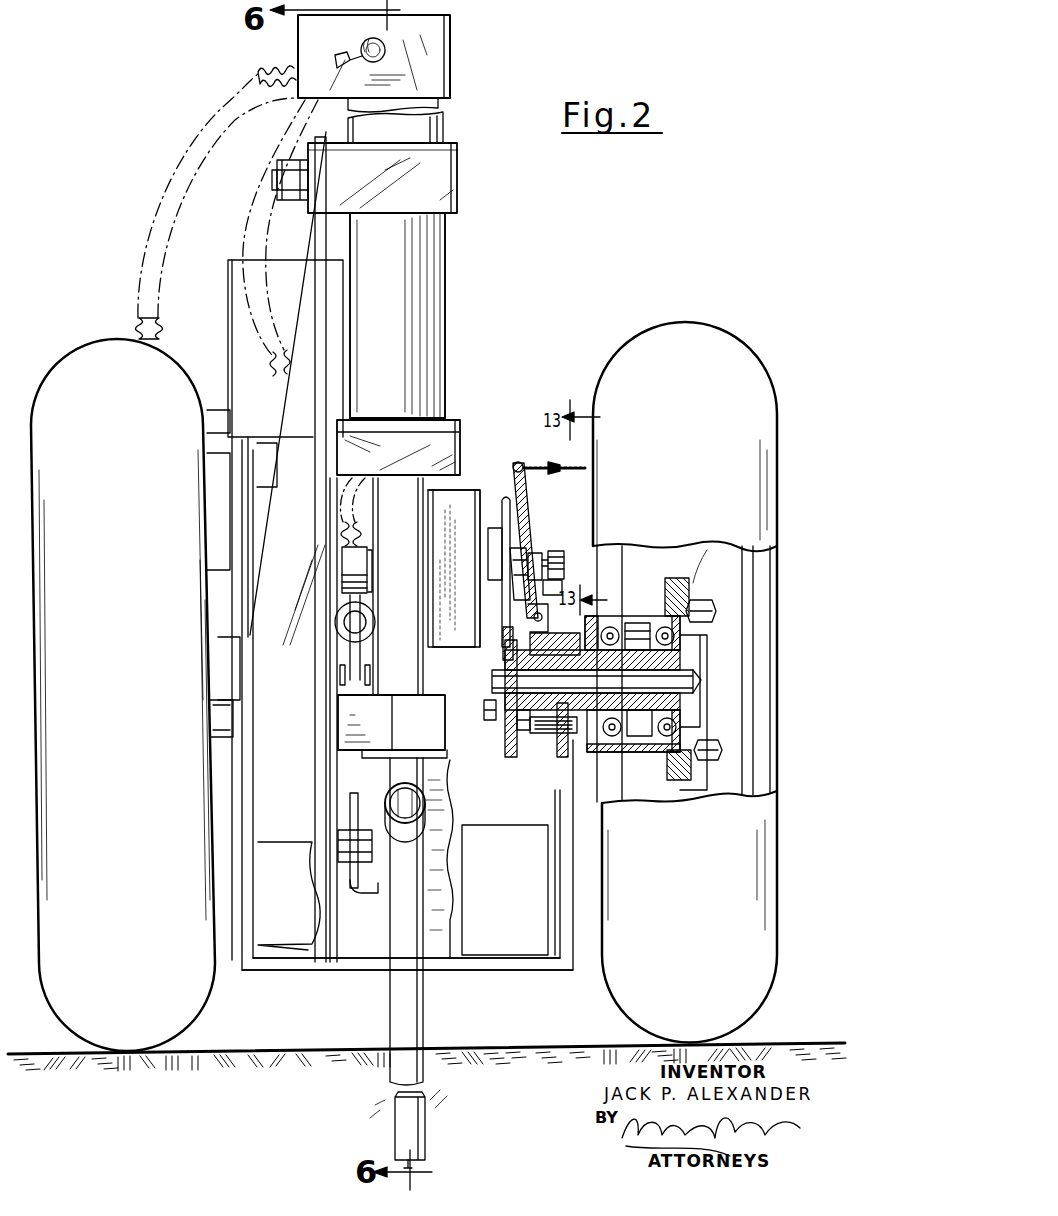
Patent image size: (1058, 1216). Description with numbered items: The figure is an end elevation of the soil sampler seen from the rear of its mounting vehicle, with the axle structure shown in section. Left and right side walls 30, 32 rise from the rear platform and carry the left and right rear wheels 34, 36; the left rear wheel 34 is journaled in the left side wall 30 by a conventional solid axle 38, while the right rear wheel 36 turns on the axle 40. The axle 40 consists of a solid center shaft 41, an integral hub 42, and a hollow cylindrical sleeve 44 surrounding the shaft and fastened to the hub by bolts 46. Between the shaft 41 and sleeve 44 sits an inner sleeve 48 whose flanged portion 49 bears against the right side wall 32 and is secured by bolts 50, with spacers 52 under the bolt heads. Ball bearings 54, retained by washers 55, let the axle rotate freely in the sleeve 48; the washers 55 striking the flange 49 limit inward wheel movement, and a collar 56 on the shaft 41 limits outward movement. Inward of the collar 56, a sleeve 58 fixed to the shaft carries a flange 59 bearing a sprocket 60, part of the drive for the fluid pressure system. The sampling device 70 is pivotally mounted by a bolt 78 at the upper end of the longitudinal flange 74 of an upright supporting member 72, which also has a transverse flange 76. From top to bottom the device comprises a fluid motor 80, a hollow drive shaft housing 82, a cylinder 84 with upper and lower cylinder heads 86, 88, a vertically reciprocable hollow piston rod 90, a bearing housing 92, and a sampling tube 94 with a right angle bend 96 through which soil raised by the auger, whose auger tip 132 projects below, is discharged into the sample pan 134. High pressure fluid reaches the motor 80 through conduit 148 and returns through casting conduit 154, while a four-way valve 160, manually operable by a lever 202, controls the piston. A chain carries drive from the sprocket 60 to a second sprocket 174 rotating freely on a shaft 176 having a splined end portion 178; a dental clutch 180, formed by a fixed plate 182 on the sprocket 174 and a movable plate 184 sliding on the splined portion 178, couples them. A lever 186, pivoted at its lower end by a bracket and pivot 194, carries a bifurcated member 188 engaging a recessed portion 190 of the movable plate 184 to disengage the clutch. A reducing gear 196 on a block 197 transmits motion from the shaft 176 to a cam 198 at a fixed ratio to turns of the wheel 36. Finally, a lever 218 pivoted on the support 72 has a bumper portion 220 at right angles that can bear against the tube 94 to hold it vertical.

The left side wall 30 is at (243, 825).
The right side wall 32 is at (569, 970).
The left rear wheel 34 is at (125, 820).
The right rear wheel 36 is at (686, 862).
The solid axle 38 is at (218, 740).
The axle 40 is at (693, 679).
The solid center shaft 41 is at (702, 688).
The hub 42 is at (703, 712).
The hollow cylindrical sleeve 44 is at (632, 626).
The bolts 46 is at (708, 612).
The hollow cylindrical sleeve 48 is at (640, 728).
The flanged portion 49 is at (565, 757).
The bolts 50 is at (547, 639).
The spacer 52 is at (548, 735).
The ball bearings 54 is at (666, 740).
The washers 55 is at (601, 631).
The collar 56 is at (560, 683).
The sleeve 58 is at (490, 708).
The flange 59 is at (524, 732).
The sprocket 60 is at (508, 758).
The sampling device 70 is at (450, 338).
The upright supporting member 72 is at (310, 730).
The longitudinal flange 74 is at (330, 793).
The transverse flange 76 is at (294, 409).
The bolt 78 is at (279, 198).
The fluid motor 80 is at (437, 58).
The drive shaft housing 82 is at (423, 128).
The cylinder 84 is at (440, 370).
The upper cylinder head 86 is at (440, 186).
The lower cylinder head 88 is at (454, 447).
The piston rod 90 is at (411, 668).
The bearing housing 92 is at (452, 757).
The sampling tube 94 is at (415, 1021).
The right angle bend 96 is at (425, 804).
The auger tip 132 is at (426, 1166).
The sample pan 134 is at (528, 842).
The conduit 148 is at (260, 64).
The casting conduit 154 is at (358, 44).
The four-way valve 160 is at (360, 645).
The second sprocket 174 is at (505, 530).
The shaft 176 is at (456, 604).
The splined end portion 178 is at (562, 572).
The dental clutch 180 is at (504, 535).
The fixed plate 182 is at (492, 585).
The movable plate 184 is at (508, 628).
The lever 186 is at (519, 461).
The bifurcated member 188 is at (524, 540).
The recessed portion 190 is at (539, 555).
The bracket and pivot 194 is at (549, 613).
The reducing gear 196 is at (455, 505).
The block 197 is at (392, 726).
The cam 198 is at (362, 560).
The lever 202 is at (348, 655).
The lever 218 is at (354, 793).
The bumper portion 220 is at (378, 878).